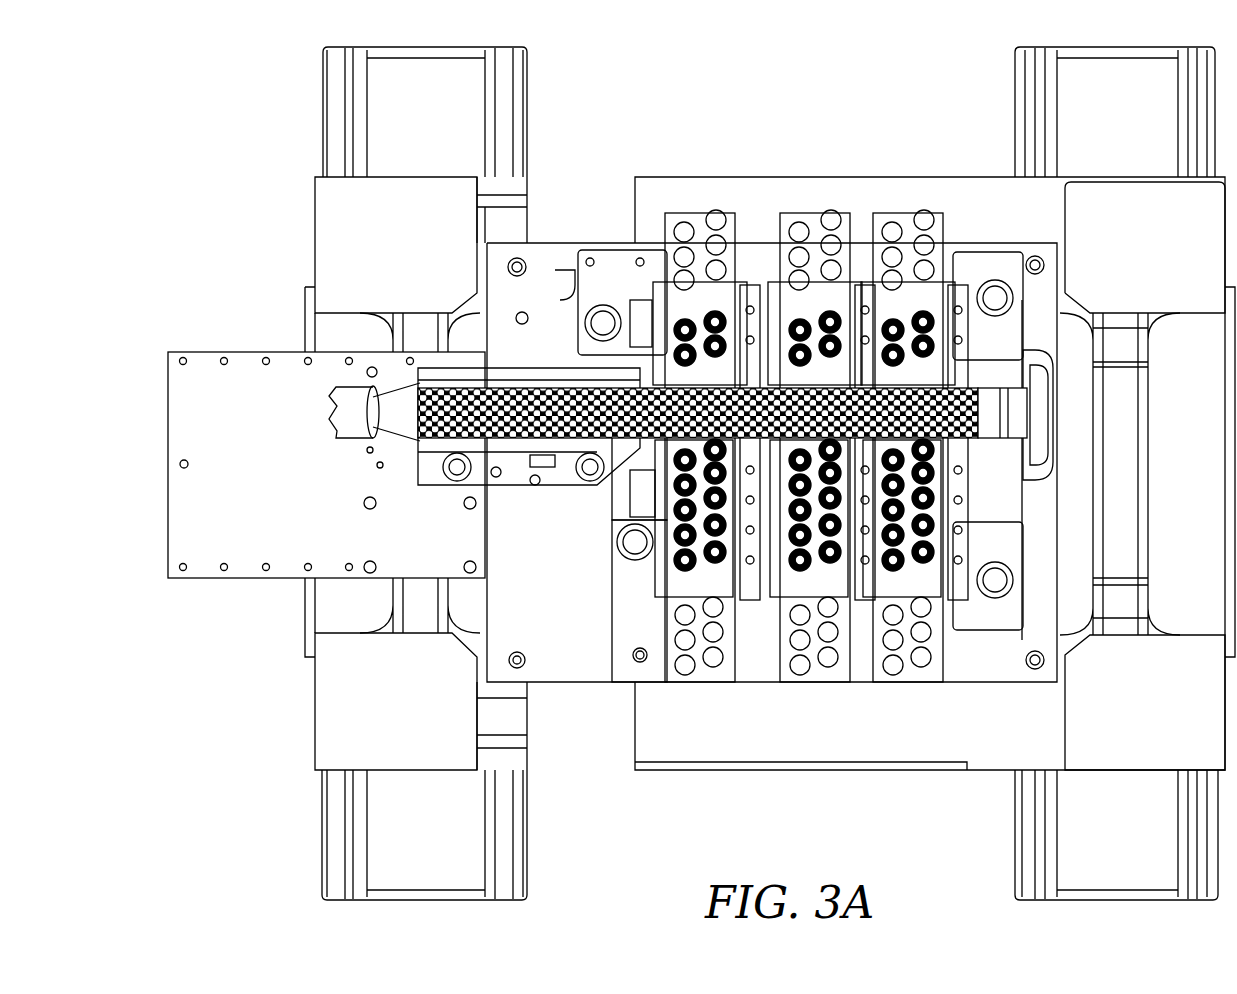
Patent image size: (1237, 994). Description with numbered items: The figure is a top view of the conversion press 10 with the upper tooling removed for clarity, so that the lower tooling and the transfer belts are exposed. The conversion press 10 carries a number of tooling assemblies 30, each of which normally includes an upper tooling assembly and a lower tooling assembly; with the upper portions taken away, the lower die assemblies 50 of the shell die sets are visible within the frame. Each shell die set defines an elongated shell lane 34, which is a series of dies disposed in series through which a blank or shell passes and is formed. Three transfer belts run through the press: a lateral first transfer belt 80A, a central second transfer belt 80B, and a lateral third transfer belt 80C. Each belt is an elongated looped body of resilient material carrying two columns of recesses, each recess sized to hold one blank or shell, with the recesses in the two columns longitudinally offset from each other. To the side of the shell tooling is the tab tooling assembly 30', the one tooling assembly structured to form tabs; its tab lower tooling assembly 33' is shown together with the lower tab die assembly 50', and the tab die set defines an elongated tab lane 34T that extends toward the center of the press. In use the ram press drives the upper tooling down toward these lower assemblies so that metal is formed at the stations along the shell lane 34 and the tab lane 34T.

The conversion press 10 is at (740, 116).
The tooling assembly 30 is at (935, 473).
The tab tooling assembly 30' is at (479, 473).
The tab lower tooling assembly 33' is at (529, 457).
The shell lane 34 is at (807, 773).
The tab lane 34T is at (298, 410).
The lower die assembly 50 is at (620, 556).
The lower tab die assembly 50' is at (547, 307).
The first transfer belt 80A is at (700, 685).
The second transfer belt 80B is at (815, 685).
The third transfer belt 80C is at (907, 685).